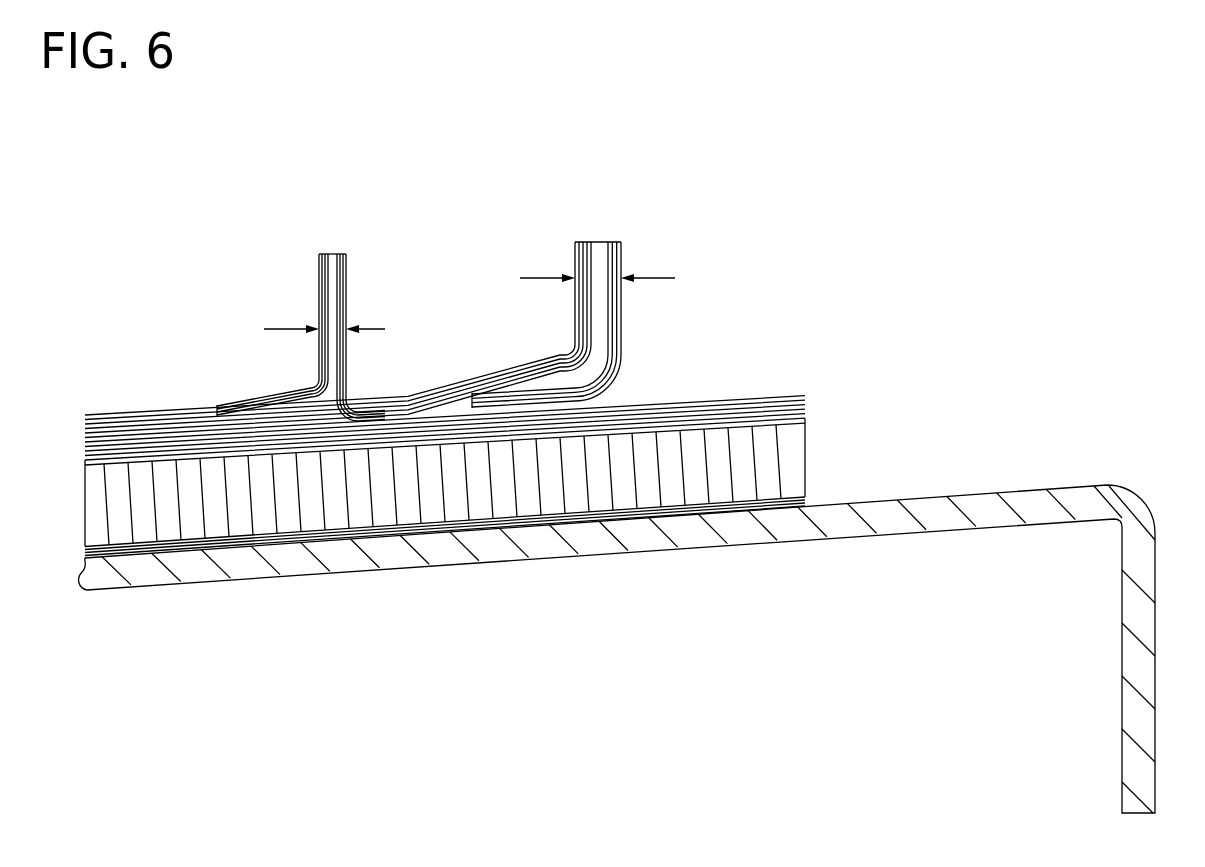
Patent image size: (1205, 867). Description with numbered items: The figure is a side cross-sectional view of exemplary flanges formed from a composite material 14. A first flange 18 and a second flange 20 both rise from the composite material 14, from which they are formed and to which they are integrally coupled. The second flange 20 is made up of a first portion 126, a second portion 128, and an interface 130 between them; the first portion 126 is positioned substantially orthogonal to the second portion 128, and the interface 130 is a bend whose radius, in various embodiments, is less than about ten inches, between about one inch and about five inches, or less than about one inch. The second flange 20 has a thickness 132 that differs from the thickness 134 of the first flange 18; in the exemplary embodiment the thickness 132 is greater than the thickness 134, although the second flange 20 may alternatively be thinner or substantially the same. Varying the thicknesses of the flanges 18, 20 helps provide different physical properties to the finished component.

The composite material 14 is at (818, 436).
The first flange 18 is at (312, 243).
The second flange 20 is at (580, 274).
The first portion 126 is at (588, 261).
The second portion 128 is at (513, 381).
The interface 130 is at (572, 350).
The thickness 132 is at (658, 277).
The thickness 134 is at (264, 329).